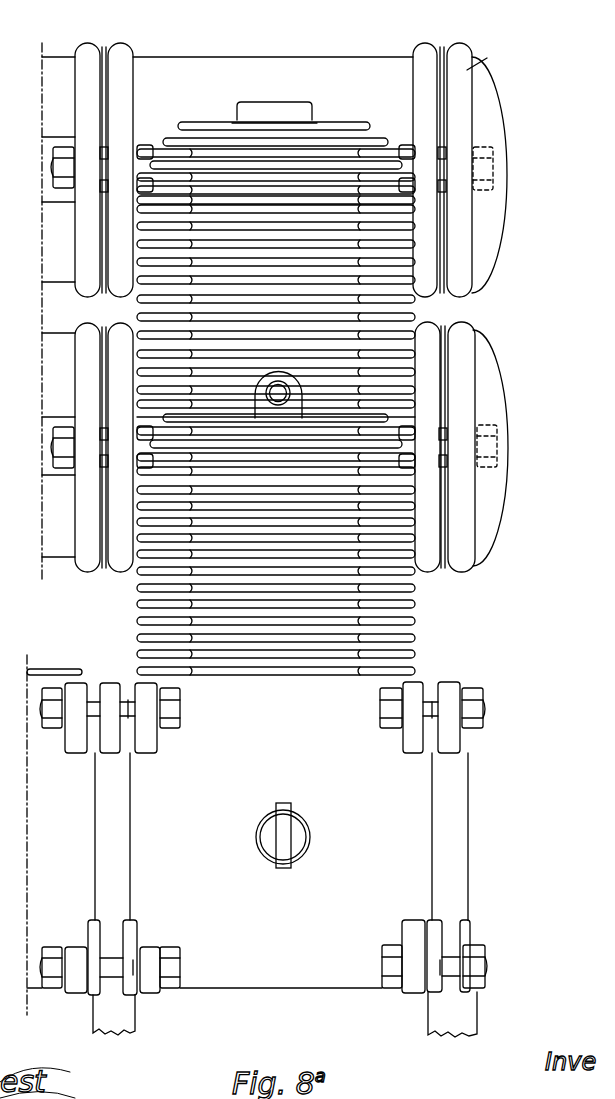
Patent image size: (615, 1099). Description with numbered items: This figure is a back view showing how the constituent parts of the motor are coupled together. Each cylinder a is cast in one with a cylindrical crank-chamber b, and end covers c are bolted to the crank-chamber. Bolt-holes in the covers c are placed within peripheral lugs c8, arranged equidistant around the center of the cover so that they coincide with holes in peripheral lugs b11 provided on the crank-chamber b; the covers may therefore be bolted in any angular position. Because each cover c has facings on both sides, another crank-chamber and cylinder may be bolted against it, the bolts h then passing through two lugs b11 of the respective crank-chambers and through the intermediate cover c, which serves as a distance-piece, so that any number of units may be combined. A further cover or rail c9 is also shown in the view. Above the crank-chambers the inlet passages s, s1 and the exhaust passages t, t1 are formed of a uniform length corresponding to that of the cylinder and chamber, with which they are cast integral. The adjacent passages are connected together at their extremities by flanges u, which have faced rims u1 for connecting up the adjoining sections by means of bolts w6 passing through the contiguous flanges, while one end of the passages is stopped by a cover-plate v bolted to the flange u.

The inlet passage s is at (292, 72).
The inlet passage s1 is at (393, 363).
The flange u is at (125, 395).
The faced rim u1 is at (448, 407).
The cover-plate v is at (462, 385).
The bolt w6 is at (447, 445).
The cylinder a is at (276, 440).
The exhaust passage t is at (383, 250).
The exhaust passage t1 is at (407, 480).
The crank-chamber b is at (292, 866).
The peripheral lug b11 is at (415, 948).
The end cover c is at (108, 812).
The peripheral lug c8 is at (443, 945).
The rail c9 is at (455, 828).
The bolt h is at (442, 988).